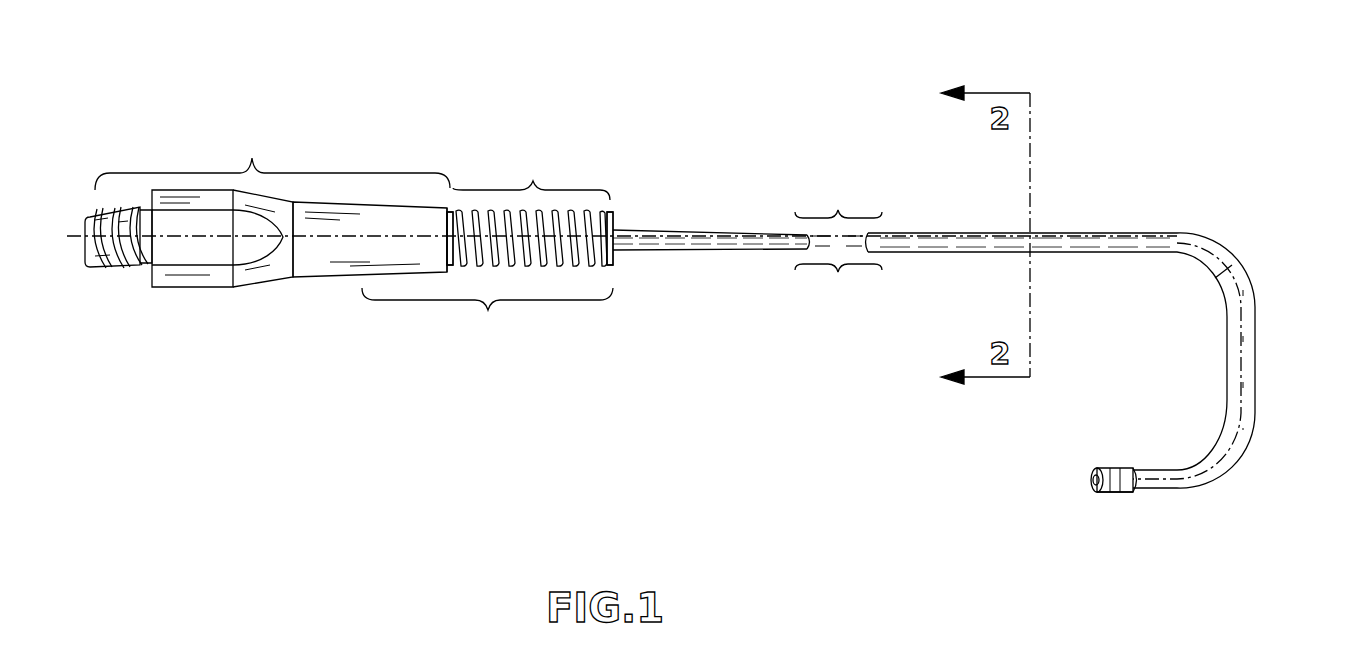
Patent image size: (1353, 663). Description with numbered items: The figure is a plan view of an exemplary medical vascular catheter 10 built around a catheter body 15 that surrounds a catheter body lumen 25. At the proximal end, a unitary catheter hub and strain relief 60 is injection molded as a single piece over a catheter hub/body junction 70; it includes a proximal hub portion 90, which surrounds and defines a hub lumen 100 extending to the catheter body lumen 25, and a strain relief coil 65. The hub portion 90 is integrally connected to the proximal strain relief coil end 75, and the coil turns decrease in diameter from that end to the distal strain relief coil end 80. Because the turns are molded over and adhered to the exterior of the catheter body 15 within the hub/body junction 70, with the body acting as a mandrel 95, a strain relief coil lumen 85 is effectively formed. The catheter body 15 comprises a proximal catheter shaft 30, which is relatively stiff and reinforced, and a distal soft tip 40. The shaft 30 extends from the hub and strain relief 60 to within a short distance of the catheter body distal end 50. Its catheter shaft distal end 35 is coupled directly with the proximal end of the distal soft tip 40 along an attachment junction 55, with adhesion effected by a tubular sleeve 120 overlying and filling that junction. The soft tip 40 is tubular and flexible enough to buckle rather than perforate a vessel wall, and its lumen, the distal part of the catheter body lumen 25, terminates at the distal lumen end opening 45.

The medical vascular catheter 10 is at (680, 322).
The catheter body 15 is at (1069, 222).
The catheter body lumen 25 is at (857, 241).
The proximal catheter shaft 30 is at (903, 231).
The catheter shaft distal end 35 is at (1236, 278).
The distal soft tip 40 is at (1104, 500).
The distal lumen end opening 45 is at (1088, 478).
The catheter body distal end 50 is at (1093, 466).
The attachment junction 55 is at (1123, 488).
The unitary catheter hub and strain relief 60 is at (522, 112).
The strain relief coil 65 is at (533, 181).
The catheter hub/body junction 70 is at (487, 316).
The proximal strain relief coil end 75 is at (455, 183).
The distal strain relief coil end 80 is at (612, 210).
The strain relief coil lumen 85 is at (616, 225).
The proximal hub portion 90 is at (252, 158).
The mandrel 95 is at (120, 273).
The hub lumen 100 is at (82, 214).
The tubular sleeve 120 is at (1115, 468).